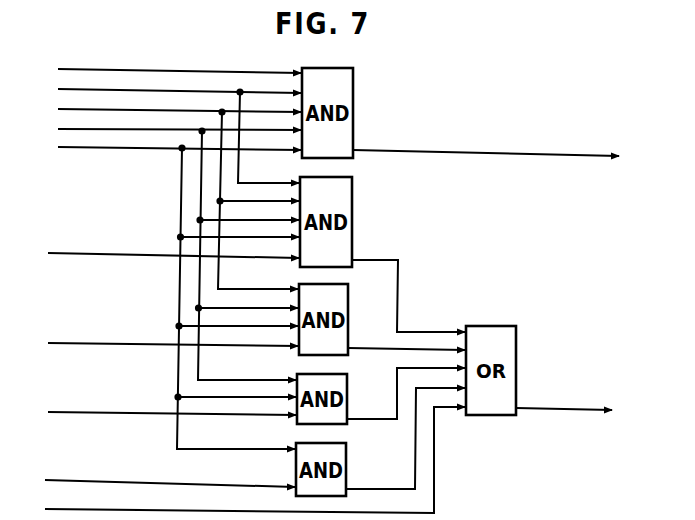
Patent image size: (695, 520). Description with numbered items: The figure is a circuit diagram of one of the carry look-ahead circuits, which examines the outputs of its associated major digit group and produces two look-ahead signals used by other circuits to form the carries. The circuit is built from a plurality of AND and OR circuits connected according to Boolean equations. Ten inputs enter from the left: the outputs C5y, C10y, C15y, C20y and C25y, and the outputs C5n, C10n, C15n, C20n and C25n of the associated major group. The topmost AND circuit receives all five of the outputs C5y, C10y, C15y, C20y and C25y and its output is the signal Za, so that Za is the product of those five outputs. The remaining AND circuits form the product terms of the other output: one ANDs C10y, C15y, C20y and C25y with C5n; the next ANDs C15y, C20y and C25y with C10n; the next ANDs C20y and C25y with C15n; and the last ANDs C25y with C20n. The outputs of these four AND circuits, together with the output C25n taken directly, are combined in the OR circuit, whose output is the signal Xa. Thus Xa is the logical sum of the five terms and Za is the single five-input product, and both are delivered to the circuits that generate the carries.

The C5y output C5y is at (160, 71).
The C10y output C10y is at (160, 132).
The C15y output C15y is at (160, 195).
The C20y output C20y is at (160, 251).
The C25y output C25y is at (160, 294).
The C5n output C5n is at (158, 254).
The C10n output C10n is at (157, 346).
The C15n output C15n is at (156, 416).
The C20n output C20n is at (153, 483).
The C25n output C25n is at (238, 462).
The Za output Za is at (499, 158).
The Xa output Xa is at (579, 412).